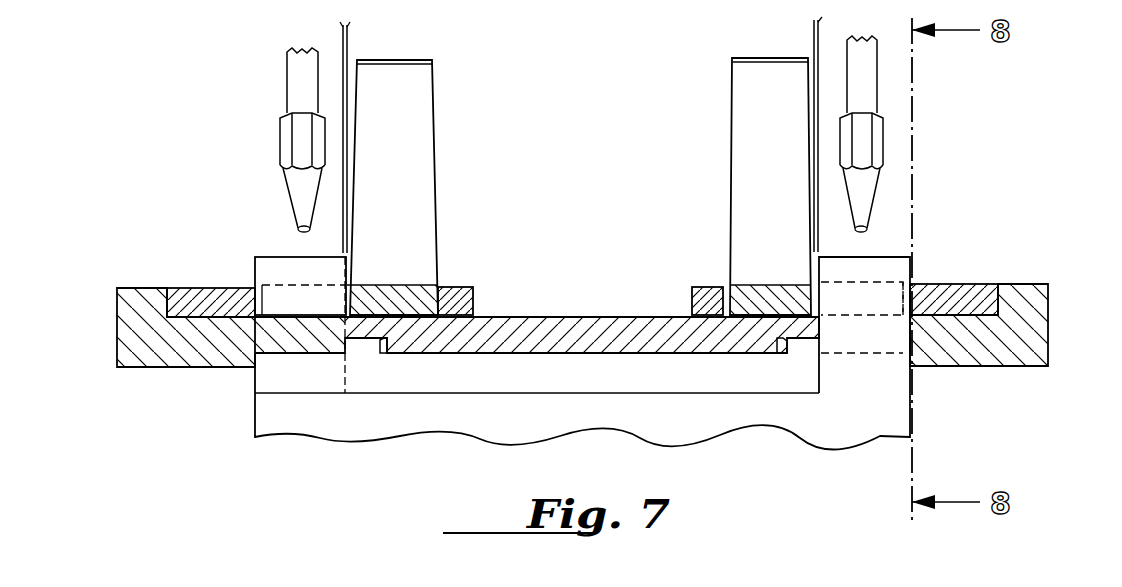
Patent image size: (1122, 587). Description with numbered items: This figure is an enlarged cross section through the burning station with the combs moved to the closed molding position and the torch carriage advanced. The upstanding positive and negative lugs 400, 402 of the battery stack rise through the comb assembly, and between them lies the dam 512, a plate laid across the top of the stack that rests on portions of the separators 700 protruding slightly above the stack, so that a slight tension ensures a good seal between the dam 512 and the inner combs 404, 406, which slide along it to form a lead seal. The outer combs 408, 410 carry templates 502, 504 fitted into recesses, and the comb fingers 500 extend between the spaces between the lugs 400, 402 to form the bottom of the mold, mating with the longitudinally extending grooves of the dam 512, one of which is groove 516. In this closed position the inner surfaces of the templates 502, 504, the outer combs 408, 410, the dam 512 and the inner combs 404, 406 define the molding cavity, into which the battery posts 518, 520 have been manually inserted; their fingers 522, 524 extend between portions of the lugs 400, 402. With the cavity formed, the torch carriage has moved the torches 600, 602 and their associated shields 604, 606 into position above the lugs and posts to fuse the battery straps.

The positive lug 400 is at (290, 268).
The negative lug 402 is at (886, 267).
The inner comb 404 is at (462, 298).
The inner comb 406 is at (700, 300).
The outer comb 408 is at (140, 340).
The outer comb 410 is at (1007, 347).
The finger 500 is at (370, 342).
The template 502 is at (200, 297).
The template 504 is at (985, 300).
The dam 512 is at (552, 337).
The longitudinally extending groove 516 is at (391, 344).
The post 518 is at (421, 137).
The post 520 is at (747, 174).
The finger 522 is at (287, 302).
The finger 524 is at (905, 270).
The torch 600 is at (297, 193).
The torch 602 is at (865, 195).
The shield 604 is at (349, 46).
The shield 606 is at (812, 35).
The separator 700 is at (543, 380).